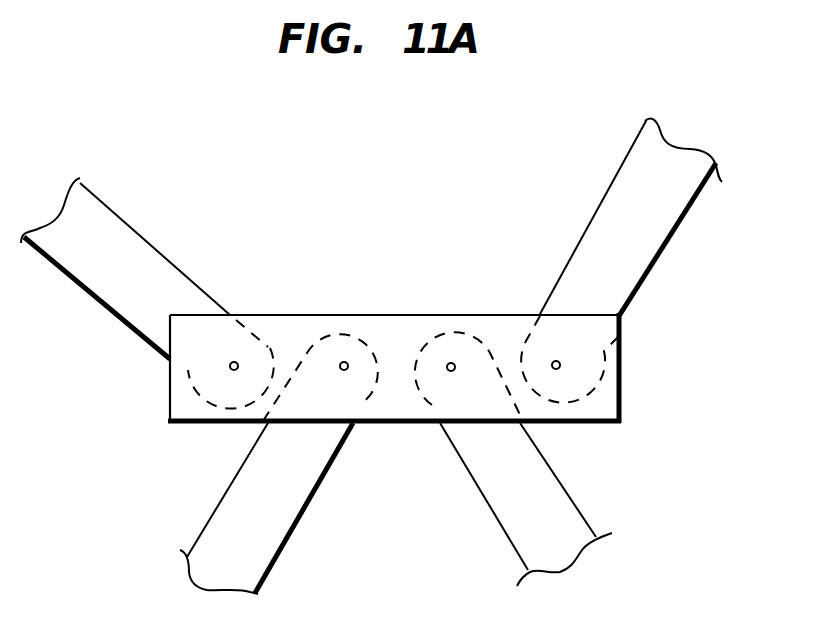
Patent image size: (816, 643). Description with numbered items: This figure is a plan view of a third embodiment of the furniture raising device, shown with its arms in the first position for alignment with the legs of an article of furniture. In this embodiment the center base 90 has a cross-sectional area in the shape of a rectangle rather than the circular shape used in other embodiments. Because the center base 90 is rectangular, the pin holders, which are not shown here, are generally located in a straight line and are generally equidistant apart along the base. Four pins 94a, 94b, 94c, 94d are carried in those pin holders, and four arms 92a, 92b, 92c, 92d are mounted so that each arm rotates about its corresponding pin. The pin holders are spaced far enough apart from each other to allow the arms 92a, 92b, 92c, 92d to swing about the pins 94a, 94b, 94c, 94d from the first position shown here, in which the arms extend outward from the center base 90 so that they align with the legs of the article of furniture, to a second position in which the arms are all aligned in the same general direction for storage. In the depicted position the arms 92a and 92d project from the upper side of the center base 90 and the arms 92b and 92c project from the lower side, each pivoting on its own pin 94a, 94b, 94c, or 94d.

The center base 90 is at (621, 396).
The arm 92a is at (658, 247).
The arm 92b is at (556, 507).
The arm 92c is at (300, 507).
The arm 92d is at (140, 277).
The pin 94a is at (553, 364).
The pin 94b is at (447, 366).
The pin 94c is at (344, 362).
The pin 94d is at (237, 362).